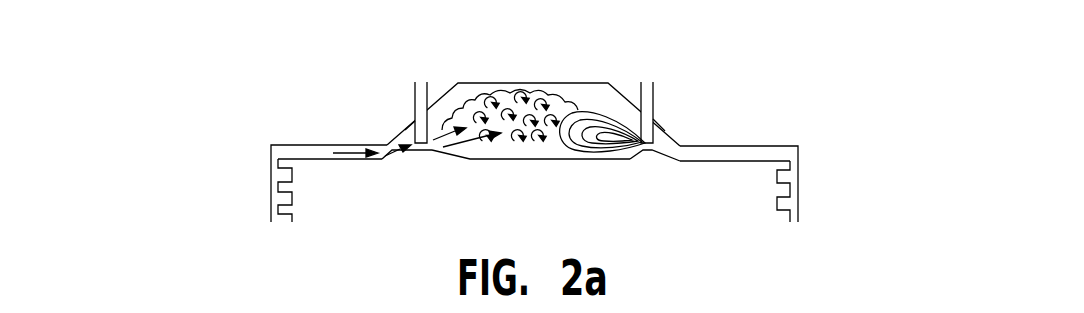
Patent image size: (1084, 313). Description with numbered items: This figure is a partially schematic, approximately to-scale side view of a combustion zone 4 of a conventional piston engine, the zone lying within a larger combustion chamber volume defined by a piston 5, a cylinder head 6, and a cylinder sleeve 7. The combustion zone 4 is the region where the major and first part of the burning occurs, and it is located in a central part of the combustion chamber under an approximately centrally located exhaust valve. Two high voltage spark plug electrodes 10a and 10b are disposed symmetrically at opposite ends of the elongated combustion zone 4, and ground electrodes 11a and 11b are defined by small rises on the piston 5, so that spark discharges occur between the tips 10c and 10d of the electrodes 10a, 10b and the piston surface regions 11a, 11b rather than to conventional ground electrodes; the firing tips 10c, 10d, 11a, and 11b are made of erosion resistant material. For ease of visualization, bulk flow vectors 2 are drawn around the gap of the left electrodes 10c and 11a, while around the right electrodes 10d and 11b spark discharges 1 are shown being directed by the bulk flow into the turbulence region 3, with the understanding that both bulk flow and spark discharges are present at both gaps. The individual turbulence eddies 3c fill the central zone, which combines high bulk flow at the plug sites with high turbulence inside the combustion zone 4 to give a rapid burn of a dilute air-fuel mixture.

The spark discharges 1 is at (610, 152).
The bulk flow vectors 2 is at (436, 137).
The turbulence region 3 is at (500, 95).
The particles 3c is at (540, 152).
The combustion zone 4 is at (585, 95).
The piston 5 is at (757, 206).
The cylinder head 6 is at (318, 104).
The cylinder sleeve 7 is at (271, 195).
The high voltage spark plug electrode 10a is at (412, 97).
The high voltage spark plug electrode 10b is at (660, 104).
The electrode tip 10c is at (413, 141).
The electrode tip 10d is at (655, 140).
The ground electrode 11a is at (440, 153).
The ground electrode 11b is at (650, 163).